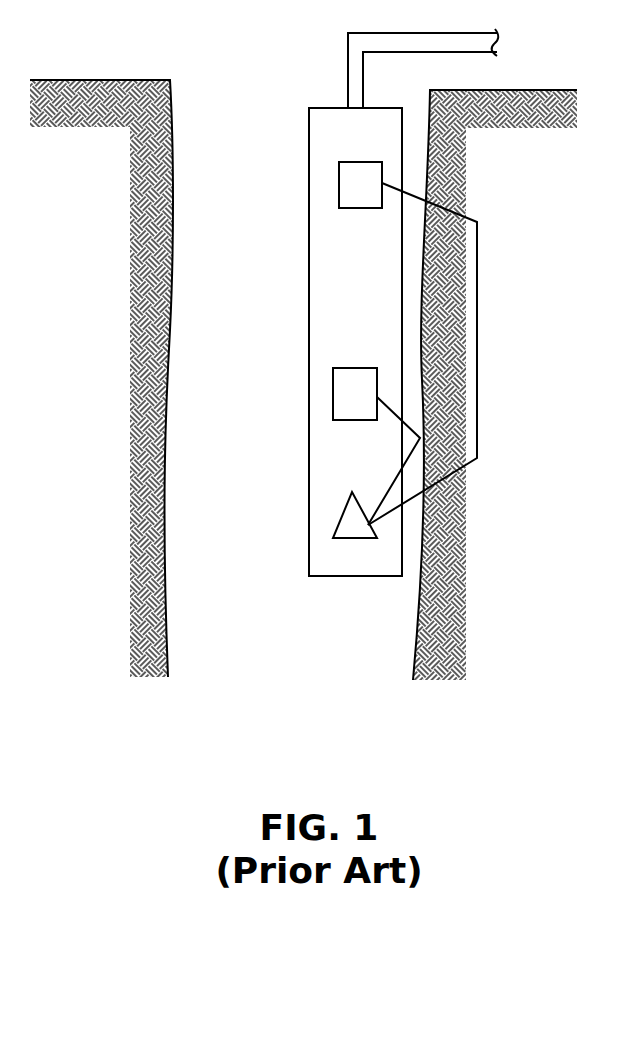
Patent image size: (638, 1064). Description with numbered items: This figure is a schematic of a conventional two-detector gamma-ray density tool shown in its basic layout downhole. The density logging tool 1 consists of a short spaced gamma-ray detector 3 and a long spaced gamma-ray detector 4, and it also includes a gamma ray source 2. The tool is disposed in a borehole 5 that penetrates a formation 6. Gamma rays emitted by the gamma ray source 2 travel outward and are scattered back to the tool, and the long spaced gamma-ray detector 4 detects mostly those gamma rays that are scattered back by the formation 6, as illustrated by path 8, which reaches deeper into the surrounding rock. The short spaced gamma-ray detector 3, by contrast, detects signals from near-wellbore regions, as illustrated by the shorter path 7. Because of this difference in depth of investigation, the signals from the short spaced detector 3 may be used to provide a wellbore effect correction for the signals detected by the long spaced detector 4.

The density logging tool 1 is at (368, 560).
The gamma ray source 2 is at (348, 527).
The short spaced gamma-ray detector 3 is at (350, 393).
The long spaced gamma-ray detector 4 is at (350, 186).
The borehole 5 is at (213, 318).
The formation 6 is at (498, 167).
The path 7 is at (395, 477).
The path 8 is at (475, 350).